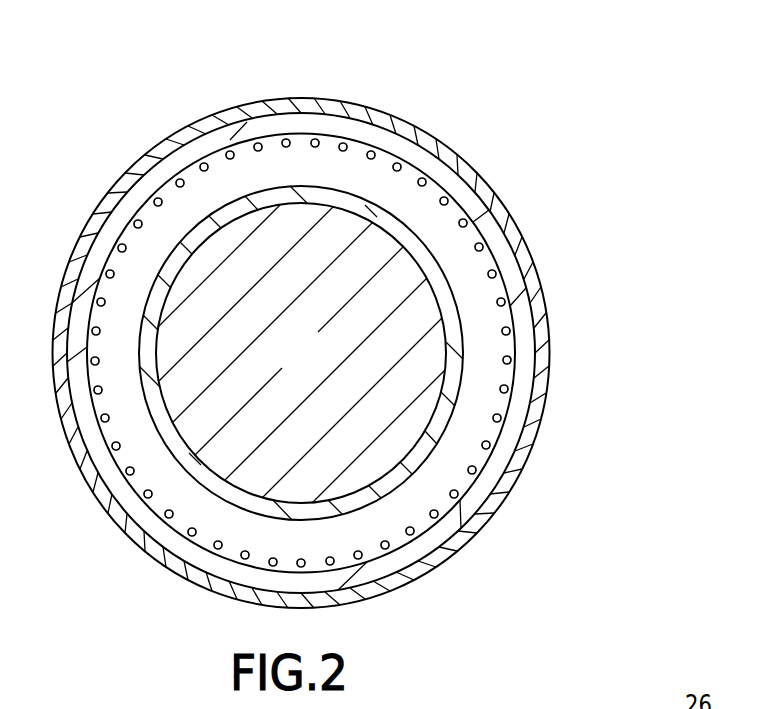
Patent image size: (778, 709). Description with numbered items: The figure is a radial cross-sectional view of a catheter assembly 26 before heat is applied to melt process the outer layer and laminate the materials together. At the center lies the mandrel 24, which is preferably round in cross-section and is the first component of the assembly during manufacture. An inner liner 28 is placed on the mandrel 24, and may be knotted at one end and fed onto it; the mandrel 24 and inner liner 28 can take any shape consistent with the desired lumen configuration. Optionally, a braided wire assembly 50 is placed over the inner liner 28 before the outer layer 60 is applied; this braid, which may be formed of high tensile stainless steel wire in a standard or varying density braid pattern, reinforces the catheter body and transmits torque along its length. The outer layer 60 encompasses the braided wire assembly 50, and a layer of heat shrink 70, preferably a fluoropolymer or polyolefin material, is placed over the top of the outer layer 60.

The catheter assembly 26 is at (538, 73).
The outer layer 60 is at (370, 135).
The heat shrink 70 is at (509, 216).
The inner liner 28 is at (405, 242).
The braided wire assembly 50 is at (505, 334).
The mandrel 24 is at (315, 364).